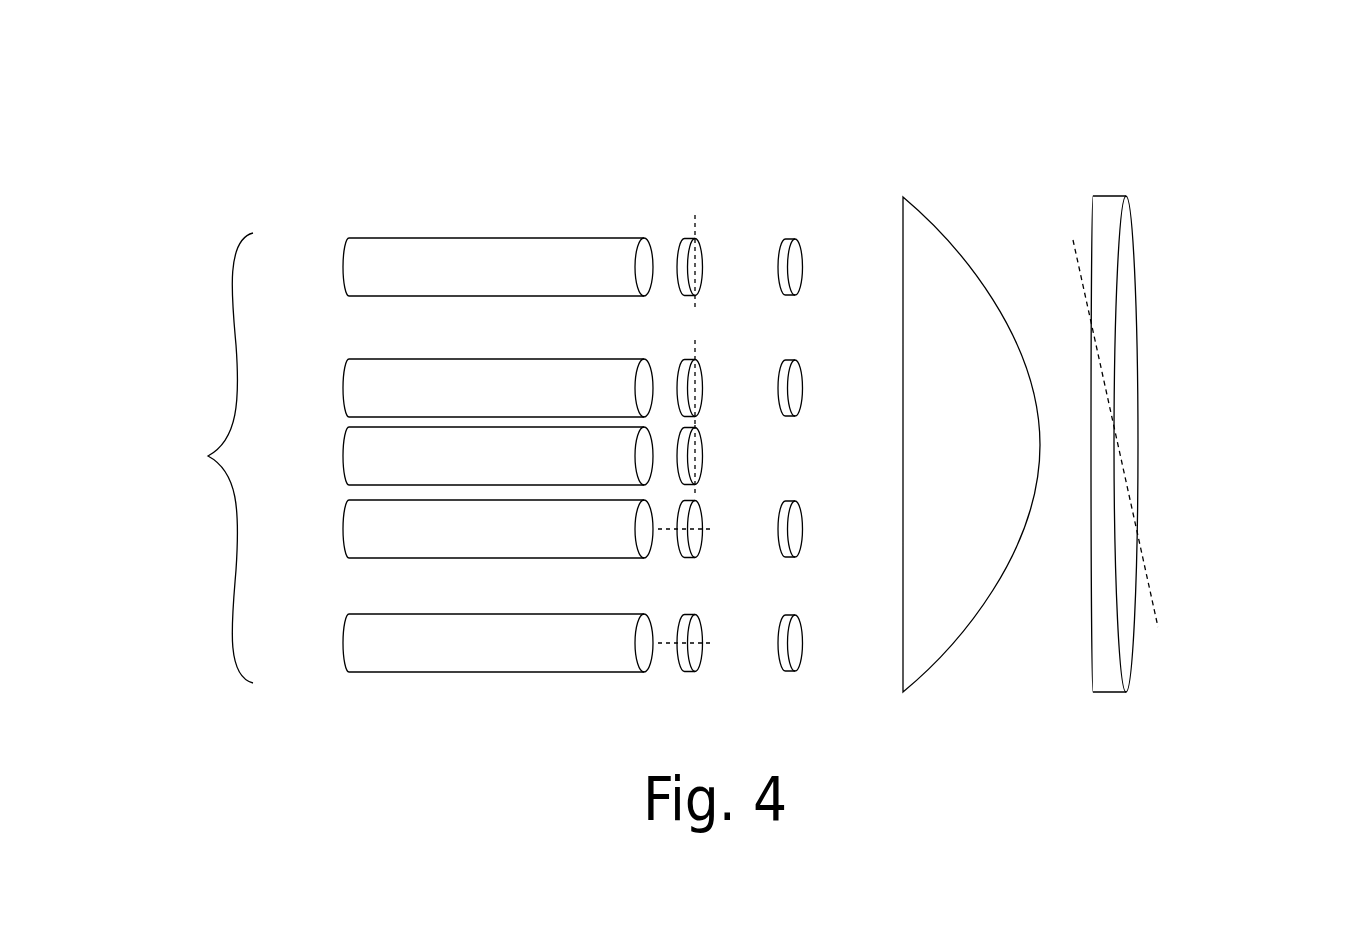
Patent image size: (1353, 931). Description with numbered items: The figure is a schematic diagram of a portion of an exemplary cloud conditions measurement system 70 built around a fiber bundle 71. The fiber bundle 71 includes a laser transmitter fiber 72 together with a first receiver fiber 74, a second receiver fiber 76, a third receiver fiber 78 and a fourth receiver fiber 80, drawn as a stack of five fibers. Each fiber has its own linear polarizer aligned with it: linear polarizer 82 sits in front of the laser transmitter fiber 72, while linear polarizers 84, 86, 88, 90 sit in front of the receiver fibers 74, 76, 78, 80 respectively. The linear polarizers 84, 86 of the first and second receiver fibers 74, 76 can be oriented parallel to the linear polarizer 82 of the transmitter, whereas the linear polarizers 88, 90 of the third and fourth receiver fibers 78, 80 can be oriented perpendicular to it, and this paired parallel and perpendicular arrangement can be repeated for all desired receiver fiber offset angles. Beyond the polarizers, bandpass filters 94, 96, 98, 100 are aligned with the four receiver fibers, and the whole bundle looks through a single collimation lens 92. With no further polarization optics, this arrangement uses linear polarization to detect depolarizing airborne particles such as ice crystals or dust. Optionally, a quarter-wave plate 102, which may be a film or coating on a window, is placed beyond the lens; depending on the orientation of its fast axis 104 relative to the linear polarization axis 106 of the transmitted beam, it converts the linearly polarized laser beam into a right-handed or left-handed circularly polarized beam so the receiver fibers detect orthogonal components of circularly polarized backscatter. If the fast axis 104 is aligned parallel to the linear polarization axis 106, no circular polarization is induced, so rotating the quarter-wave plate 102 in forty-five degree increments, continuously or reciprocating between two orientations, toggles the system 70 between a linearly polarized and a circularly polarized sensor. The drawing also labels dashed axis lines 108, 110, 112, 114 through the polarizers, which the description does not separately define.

The cloud conditions measurement system 70 is at (840, 112).
The fiber bundle 71 is at (214, 458).
The laser transmitter fiber 72 is at (342, 453).
The first receiver fiber 74 is at (342, 389).
The second receiver fiber 76 is at (342, 268).
The third receiver fiber 78 is at (342, 522).
The fourth receiver fiber 80 is at (342, 638).
The linear polarizer 82 is at (702, 440).
The linear polarizer 84 is at (698, 372).
The linear polarizer 86 is at (702, 263).
The linear polarizer 88 is at (705, 512).
The linear polarizer 90 is at (705, 632).
The single collimation lens 92 is at (960, 288).
The bandpass filter 94 is at (798, 384).
The bandpass filter 96 is at (798, 263).
The bandpass filter 98 is at (798, 529).
The bandpass filter 100 is at (798, 643).
The quarter-wave plate 102 is at (1168, 350).
The fast axis 104 is at (1148, 578).
The linear polarization axis 106 is at (695, 457).
The optical axis 108 is at (695, 382).
The optical axis 110 is at (693, 300).
The optical axis 112 is at (712, 528).
The optical axis 114 is at (712, 642).